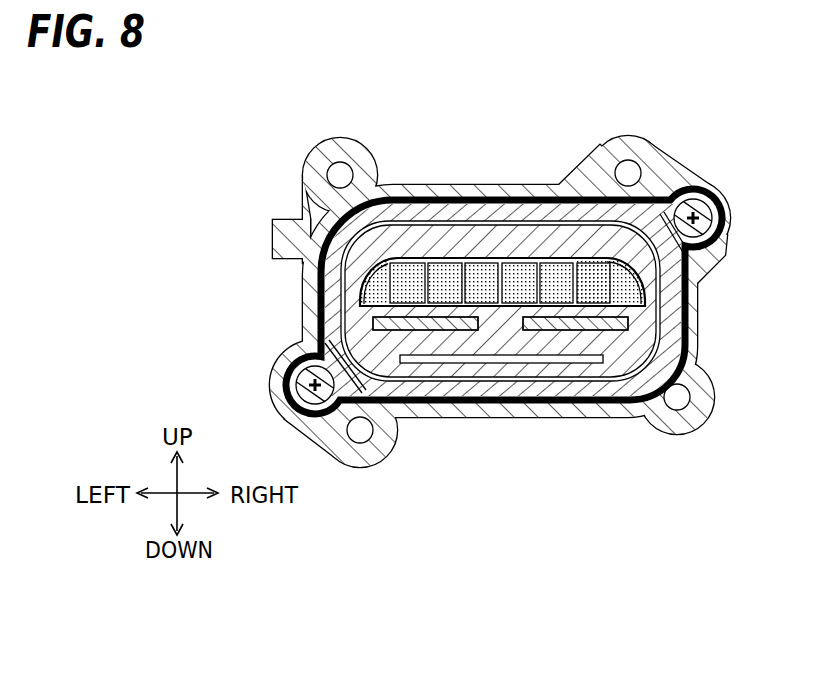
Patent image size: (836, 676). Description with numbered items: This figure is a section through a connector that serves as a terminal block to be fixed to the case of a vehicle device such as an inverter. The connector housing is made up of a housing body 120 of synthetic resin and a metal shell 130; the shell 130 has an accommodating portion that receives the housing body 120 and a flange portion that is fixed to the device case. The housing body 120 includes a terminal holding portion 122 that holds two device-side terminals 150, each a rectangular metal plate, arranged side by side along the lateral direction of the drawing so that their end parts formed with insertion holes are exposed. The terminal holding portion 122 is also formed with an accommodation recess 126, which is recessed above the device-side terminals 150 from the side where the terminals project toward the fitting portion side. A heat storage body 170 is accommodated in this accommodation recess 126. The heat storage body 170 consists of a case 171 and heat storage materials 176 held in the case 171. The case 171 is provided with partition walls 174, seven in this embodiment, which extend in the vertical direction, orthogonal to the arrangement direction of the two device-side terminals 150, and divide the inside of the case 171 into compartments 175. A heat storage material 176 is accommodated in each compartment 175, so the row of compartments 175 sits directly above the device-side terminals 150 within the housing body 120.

The housing body 120 is at (697, 303).
The terminal holding portion 122 is at (510, 364).
The accommodation recess 126 is at (486, 265).
The shell 130 is at (678, 162).
The device-side terminals 150 is at (456, 331).
The heat storage body 170 is at (360, 283).
The case 171 is at (400, 258).
The partition wall 174 is at (563, 265).
The compartment 175 is at (518, 262).
The heat storage material 176 is at (447, 262).